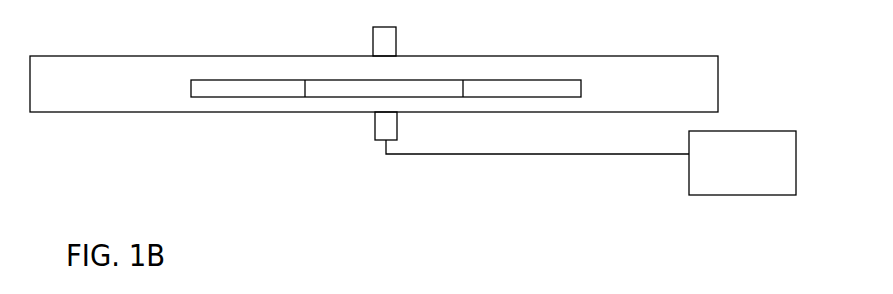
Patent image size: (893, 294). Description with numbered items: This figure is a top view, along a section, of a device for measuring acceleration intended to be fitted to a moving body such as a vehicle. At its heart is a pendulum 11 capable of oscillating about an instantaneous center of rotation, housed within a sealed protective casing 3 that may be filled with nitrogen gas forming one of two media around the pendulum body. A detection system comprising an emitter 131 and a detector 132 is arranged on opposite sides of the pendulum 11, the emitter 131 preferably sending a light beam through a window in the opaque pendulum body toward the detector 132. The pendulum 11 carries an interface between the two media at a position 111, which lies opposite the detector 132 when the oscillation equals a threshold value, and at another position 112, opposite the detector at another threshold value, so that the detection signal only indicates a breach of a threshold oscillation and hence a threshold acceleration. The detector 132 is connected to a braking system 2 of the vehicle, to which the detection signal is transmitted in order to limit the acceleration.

The sealed protective casing 3 is at (706, 55).
The pendulum 11 is at (221, 97).
The position 111 is at (463, 79).
The other position 112 is at (305, 79).
The emitter 131 is at (393, 41).
The detector 132 is at (372, 122).
The braking system 2 is at (742, 163).